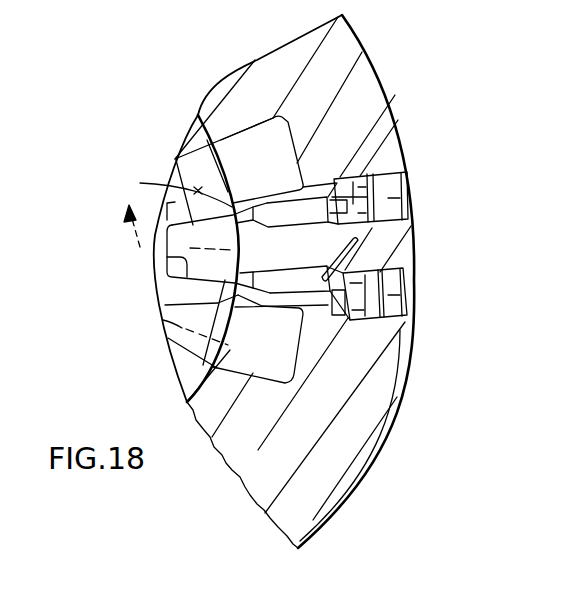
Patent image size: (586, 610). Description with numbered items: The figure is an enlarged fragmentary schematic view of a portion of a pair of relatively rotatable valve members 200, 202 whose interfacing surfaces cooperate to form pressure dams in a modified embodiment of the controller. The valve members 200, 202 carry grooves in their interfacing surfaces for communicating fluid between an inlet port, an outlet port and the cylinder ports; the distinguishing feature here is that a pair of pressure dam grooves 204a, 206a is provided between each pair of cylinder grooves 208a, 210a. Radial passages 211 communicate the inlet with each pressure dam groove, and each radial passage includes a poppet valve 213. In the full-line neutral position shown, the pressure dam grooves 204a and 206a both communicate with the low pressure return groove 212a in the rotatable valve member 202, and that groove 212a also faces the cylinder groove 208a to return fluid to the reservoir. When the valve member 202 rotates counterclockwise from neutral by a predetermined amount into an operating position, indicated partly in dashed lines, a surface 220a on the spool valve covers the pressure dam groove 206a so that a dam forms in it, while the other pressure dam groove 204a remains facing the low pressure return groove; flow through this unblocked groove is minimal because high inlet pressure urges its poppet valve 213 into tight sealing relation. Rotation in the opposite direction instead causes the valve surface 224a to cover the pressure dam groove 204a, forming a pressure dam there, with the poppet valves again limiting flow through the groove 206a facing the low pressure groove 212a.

The valve member 200 is at (373, 94).
The rotatable valve member 202 is at (183, 368).
The pressure dam groove 204a is at (268, 228).
The pressure dam groove 206a is at (272, 258).
The cylinder groove 208a is at (253, 122).
The cylinder groove 210a is at (294, 308).
The radial passage 211 is at (347, 242).
The low pressure return groove 212a is at (190, 253).
The poppet valve 213 is at (353, 178).
The surface 220a is at (165, 305).
The valve surface 224a is at (140, 183).